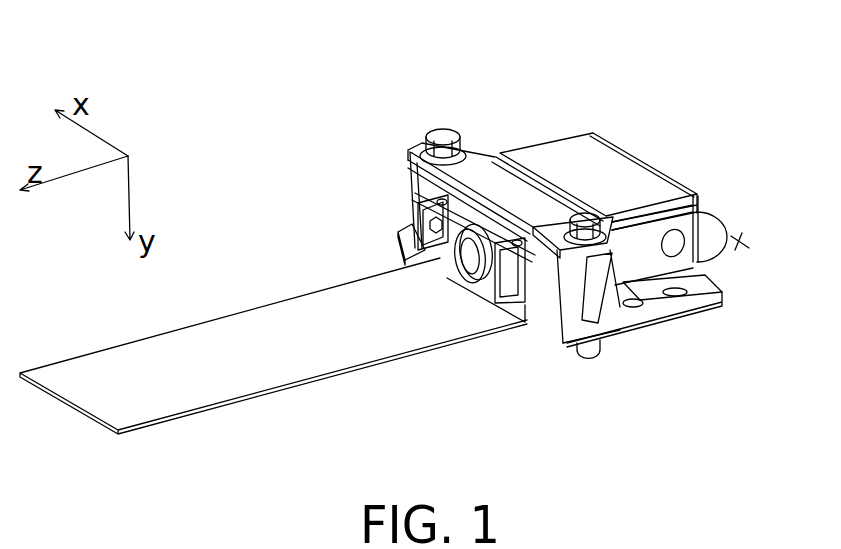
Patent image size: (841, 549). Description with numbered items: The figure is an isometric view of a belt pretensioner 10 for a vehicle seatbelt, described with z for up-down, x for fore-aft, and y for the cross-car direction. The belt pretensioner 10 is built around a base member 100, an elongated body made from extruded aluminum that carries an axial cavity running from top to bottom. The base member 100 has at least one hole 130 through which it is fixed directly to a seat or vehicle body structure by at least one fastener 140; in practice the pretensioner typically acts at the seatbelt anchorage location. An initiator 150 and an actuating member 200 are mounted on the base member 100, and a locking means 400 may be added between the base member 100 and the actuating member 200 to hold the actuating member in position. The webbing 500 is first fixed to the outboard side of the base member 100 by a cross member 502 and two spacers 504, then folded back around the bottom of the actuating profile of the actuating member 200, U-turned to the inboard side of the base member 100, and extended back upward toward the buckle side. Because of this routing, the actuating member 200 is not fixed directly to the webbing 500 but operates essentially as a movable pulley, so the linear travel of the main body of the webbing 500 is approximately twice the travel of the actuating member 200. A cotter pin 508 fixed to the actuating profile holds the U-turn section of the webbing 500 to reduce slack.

The belt pretensioner 10 is at (213, 90).
The base member 100 is at (542, 283).
The hole 130 is at (592, 310).
The fastener 140 is at (435, 135).
The initiator 150 is at (468, 257).
The actuating member 200 is at (708, 227).
The locking means 400 is at (420, 218).
The webbing 500 is at (330, 333).
The cross member 502 is at (553, 290).
The spacers 504 is at (605, 285).
The cotter pin 508 is at (737, 240).